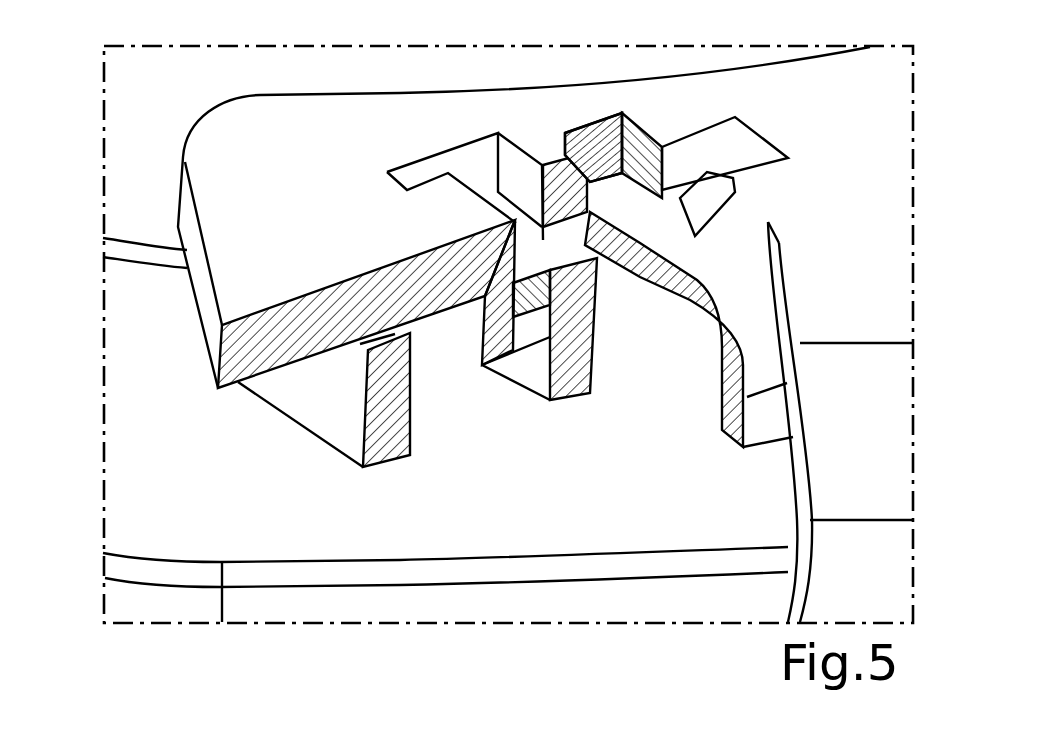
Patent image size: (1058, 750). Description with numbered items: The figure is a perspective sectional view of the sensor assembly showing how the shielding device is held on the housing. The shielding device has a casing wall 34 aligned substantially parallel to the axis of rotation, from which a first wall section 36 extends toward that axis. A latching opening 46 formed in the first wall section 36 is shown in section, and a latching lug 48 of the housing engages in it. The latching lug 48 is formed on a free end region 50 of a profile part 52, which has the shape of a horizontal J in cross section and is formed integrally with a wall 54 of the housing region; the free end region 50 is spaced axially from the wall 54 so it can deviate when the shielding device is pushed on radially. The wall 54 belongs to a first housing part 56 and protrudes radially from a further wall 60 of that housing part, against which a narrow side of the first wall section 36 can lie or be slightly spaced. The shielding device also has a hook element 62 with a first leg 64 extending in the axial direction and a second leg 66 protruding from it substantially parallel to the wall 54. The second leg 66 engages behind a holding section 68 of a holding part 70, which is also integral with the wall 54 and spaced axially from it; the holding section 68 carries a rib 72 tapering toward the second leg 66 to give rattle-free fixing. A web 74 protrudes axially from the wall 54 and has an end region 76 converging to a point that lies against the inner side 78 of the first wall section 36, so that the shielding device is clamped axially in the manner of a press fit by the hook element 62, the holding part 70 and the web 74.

The casing wall 34 is at (890, 592).
The first wall section 36 is at (312, 147).
The latching opening 46 is at (748, 162).
The latching lug 48 is at (697, 200).
The free end region 50 is at (668, 247).
The profile part 52 is at (755, 295).
The wall 54 is at (112, 452).
The first housing part 56 is at (130, 512).
The further wall 60 is at (125, 130).
The hook element 62 is at (490, 244).
The first leg 64 is at (500, 305).
The second leg 66 is at (519, 338).
The holding section 68 is at (540, 282).
The holding part 70 is at (580, 253).
The rib 72 is at (560, 388).
The web 74 is at (380, 430).
The end region 76 is at (392, 337).
The inner side 78 is at (272, 385).